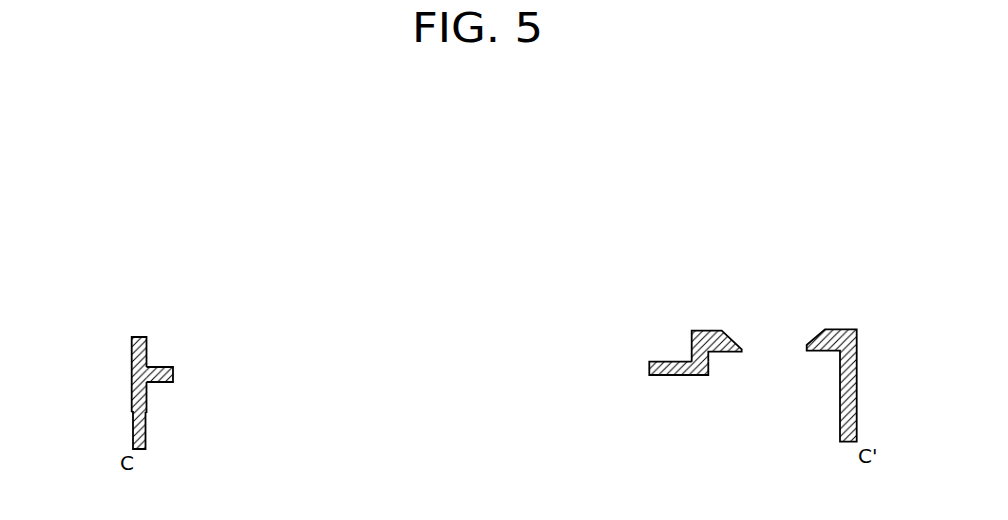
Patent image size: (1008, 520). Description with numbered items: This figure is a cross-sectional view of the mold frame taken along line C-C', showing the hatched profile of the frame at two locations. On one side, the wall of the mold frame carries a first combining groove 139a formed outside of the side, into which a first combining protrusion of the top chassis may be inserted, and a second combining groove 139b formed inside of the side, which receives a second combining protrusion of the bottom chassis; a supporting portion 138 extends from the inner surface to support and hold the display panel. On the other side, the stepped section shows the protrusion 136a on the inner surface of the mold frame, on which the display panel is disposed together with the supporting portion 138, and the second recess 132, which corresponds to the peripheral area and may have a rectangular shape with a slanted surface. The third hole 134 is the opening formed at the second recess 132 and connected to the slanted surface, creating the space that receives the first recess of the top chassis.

The second recess 132 is at (730, 331).
The third hole 134 is at (772, 347).
The protrusion 136a is at (663, 361).
The supporting portion 138 is at (165, 366).
The first combining groove 139a is at (132, 368).
The second combining groove 139b is at (133, 413).